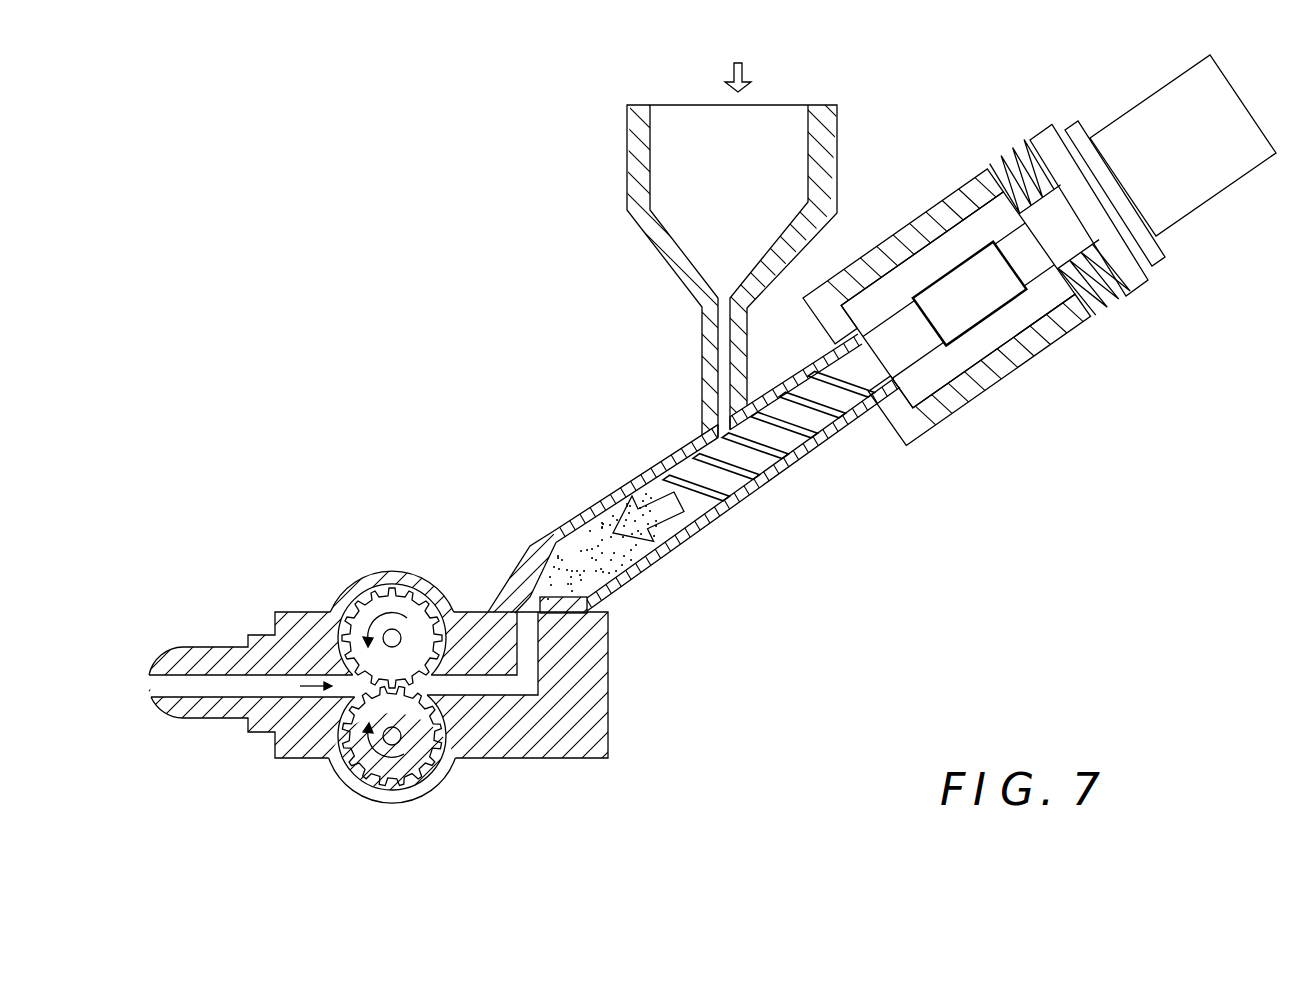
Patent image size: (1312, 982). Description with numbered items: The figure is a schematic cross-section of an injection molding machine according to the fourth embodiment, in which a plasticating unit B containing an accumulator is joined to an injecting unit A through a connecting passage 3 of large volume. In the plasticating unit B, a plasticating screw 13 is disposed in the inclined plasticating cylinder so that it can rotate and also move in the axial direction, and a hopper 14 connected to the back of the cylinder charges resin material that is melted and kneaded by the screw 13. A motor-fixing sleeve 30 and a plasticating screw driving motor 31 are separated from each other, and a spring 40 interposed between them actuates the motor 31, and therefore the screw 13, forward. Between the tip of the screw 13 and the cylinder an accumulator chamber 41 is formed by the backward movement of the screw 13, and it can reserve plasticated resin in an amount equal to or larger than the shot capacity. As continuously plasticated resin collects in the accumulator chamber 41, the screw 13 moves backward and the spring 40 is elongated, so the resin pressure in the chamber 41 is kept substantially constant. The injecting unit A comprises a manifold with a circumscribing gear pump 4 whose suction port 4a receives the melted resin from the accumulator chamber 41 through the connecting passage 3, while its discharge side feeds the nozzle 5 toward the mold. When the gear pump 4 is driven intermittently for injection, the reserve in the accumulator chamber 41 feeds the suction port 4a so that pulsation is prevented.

The connecting passage 3 is at (507, 596).
The rotary pump (gear pump) 4 is at (349, 590).
The suction port 4a is at (491, 700).
The nozzle (injection port) 5 is at (192, 647).
The plasticating screw 13 is at (775, 481).
The hopper 14 is at (627, 178).
The motor-fixing sleeve 30 is at (1000, 381).
The plasticating screw driving motor 31 is at (1200, 180).
The spring 40 is at (1112, 302).
The accumulator chamber 41 is at (582, 516).
The injecting unit A is at (610, 690).
The plasticating unit B is at (770, 548).